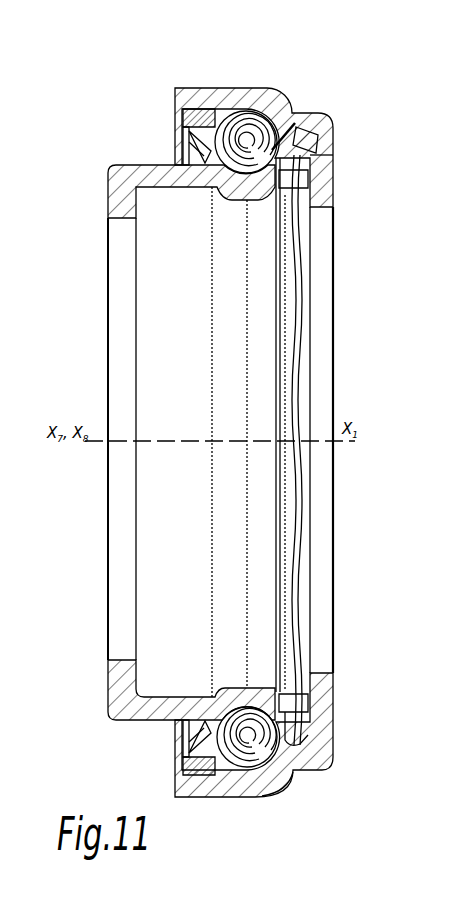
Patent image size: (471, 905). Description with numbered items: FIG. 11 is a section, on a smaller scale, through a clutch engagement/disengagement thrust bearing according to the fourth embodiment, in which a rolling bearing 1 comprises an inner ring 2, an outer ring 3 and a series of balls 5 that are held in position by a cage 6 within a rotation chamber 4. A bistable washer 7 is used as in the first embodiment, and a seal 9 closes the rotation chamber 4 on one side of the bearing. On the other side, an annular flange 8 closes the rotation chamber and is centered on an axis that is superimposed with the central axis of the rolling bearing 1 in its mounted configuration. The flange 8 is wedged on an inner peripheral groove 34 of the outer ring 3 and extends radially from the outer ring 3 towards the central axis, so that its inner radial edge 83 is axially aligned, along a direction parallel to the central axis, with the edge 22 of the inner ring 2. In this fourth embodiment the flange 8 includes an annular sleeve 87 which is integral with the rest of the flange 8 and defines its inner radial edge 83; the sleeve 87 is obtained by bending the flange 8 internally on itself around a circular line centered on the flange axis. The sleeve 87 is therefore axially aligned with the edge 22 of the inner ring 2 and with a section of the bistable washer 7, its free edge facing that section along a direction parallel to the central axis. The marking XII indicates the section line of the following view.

The rolling bearing 1 is at (346, 106).
The inner ring 2 is at (108, 168).
The outer ring 3 is at (183, 87).
The rotation chamber 4 is at (201, 144).
The balls 5 is at (248, 138).
The cage 6 is at (290, 773).
The bistable washer 7 is at (300, 700).
The annular flange 8 is at (310, 170).
The seal 9 is at (178, 747).
The edge of the inner ring 22 is at (310, 192).
The inner peripheral groove 34 is at (318, 125).
The inner radial edge 83 is at (279, 690).
The annular sleeve 87 is at (310, 186).
The section line XII is at (333, 155).